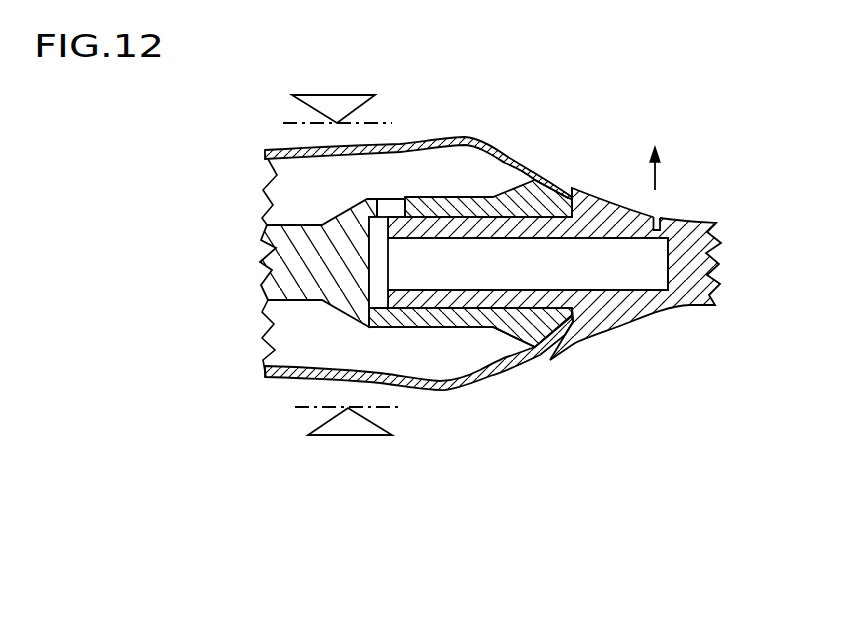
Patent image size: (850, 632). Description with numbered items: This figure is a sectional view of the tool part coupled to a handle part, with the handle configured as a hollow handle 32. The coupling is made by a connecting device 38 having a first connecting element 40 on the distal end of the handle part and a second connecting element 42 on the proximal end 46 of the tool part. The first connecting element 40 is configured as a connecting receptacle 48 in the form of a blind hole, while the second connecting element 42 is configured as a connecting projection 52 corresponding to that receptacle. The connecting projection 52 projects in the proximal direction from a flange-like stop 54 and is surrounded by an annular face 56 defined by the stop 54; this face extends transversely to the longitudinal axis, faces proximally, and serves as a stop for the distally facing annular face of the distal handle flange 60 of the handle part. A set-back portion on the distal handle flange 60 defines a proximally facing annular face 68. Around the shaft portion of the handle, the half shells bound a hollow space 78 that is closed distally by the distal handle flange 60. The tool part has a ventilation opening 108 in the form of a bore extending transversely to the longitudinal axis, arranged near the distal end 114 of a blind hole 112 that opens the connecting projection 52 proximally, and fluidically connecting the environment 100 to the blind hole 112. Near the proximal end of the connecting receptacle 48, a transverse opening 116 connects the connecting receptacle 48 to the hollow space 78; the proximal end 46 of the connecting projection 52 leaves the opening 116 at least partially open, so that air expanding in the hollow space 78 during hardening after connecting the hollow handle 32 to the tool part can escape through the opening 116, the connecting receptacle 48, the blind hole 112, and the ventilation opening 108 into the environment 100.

The hollow handle 32 is at (273, 136).
The connecting device 38 is at (351, 327).
The first connecting element 40 is at (387, 230).
The second connecting element 42 is at (462, 217).
The proximal end 46 is at (388, 297).
The connecting receptacle 48 is at (472, 312).
The connecting projection 52 is at (420, 210).
The flange-like stop 54 is at (590, 198).
The annular face 56 is at (563, 190).
The distal handle flange 60 is at (547, 345).
The annular face 68 is at (522, 352).
The hollow space 78 is at (421, 352).
The environment 100 is at (684, 112).
The ventilation opening 108 is at (658, 217).
The blind hole 112 is at (611, 292).
The distal end 114 is at (671, 272).
The opening 116 is at (397, 207).